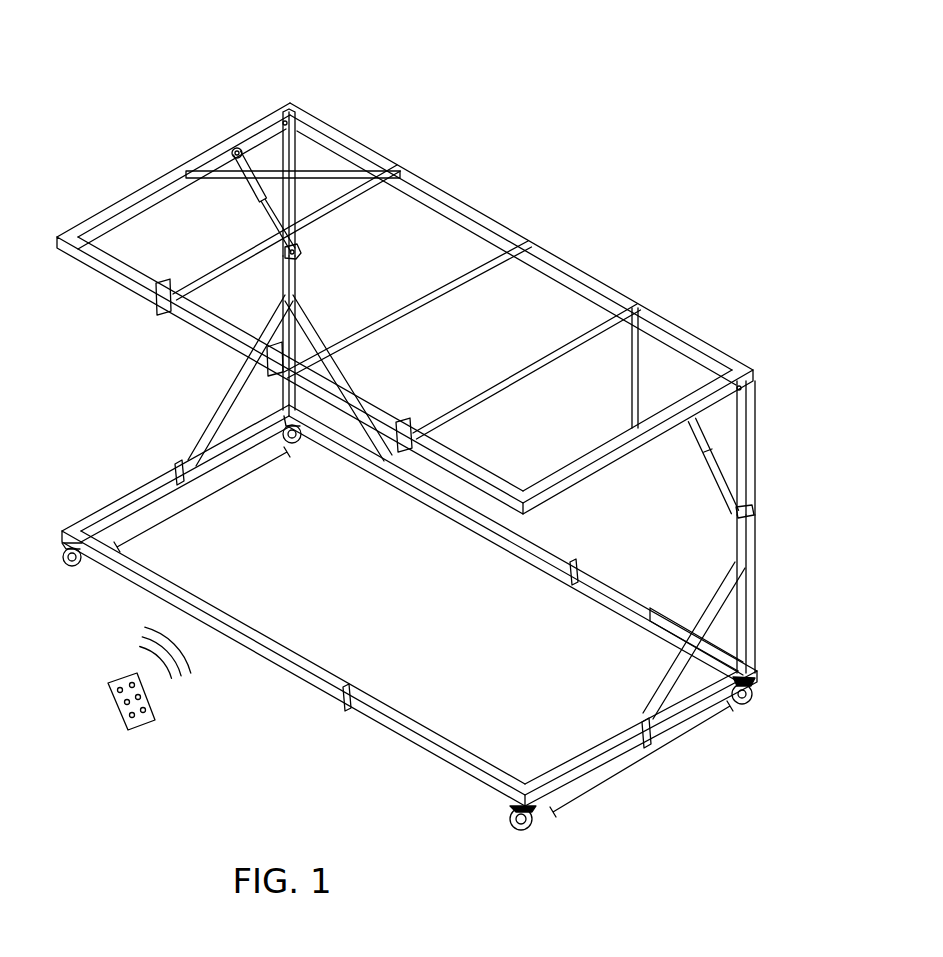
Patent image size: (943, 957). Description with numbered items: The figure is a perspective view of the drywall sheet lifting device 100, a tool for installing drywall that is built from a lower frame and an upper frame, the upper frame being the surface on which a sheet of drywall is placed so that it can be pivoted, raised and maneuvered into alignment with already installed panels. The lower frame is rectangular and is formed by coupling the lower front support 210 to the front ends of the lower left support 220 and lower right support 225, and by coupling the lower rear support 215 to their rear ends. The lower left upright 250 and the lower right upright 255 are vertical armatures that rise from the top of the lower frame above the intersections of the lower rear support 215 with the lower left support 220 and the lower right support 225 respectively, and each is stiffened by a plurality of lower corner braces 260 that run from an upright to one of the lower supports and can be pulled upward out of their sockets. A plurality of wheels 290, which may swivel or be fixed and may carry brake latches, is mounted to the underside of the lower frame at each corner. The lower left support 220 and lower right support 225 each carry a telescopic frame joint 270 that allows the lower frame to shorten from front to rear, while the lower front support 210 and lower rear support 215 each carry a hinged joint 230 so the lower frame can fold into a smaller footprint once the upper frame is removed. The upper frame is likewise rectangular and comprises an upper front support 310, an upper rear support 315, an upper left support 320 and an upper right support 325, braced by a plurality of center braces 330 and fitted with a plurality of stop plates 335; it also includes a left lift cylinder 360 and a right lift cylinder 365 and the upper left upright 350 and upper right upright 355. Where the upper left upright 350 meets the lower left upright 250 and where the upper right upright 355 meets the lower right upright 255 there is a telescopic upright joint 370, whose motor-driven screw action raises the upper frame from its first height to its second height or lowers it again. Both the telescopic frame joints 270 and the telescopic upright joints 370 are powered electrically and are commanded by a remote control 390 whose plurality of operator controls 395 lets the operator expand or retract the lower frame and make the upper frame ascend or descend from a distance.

The drywall sheet lifting device 100 is at (640, 110).
The lower front support 210 is at (284, 668).
The lower rear support 215 is at (527, 548).
The lower left support 220 is at (224, 496).
The lower right support 225 is at (641, 744).
The hinged joint 230 is at (572, 582).
The lower left upright 250 is at (305, 273).
The lower right upright 255 is at (760, 560).
The lower corner braces 260 is at (308, 320).
The telescopic frame joint 270 is at (176, 463).
The wheels 290 is at (72, 569).
The upper front support 310 is at (130, 282).
The upper rear support 315 is at (583, 272).
The upper left support 320 is at (125, 196).
The upper right support 325 is at (550, 480).
The center braces 330 is at (358, 197).
The stop plates 335 is at (160, 302).
The upper left upright 350 is at (288, 146).
The upper right upright 355 is at (754, 410).
The left lift cylinder 360 is at (273, 225).
The right lift cylinder 365 is at (716, 490).
The telescopic upright joint 370 is at (306, 258).
The remote control 390 is at (143, 730).
The operator controls 395 is at (132, 716).